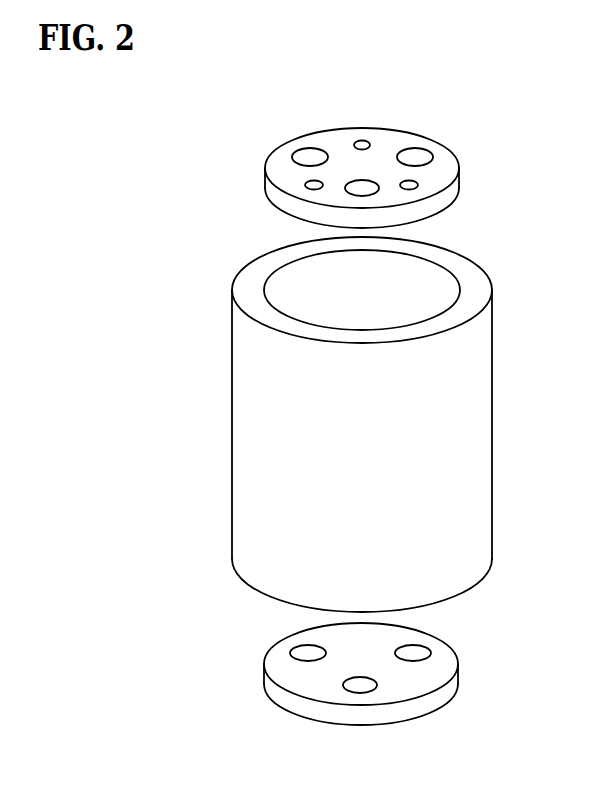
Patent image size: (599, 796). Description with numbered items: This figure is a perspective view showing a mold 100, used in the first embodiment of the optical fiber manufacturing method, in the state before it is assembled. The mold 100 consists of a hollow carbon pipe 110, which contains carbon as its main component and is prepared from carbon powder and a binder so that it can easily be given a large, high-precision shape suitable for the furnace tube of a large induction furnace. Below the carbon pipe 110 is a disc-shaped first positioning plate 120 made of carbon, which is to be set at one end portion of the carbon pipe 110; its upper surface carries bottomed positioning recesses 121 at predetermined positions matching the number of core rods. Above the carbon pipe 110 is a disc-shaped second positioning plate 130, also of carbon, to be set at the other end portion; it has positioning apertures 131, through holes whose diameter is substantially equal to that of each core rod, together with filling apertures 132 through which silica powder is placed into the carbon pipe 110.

The mold 100 is at (190, 257).
The carbon pipe 110 is at (492, 394).
The first positioning plate 120 is at (458, 677).
The positioning recesses 121 is at (415, 652).
The second positioning plate 130 is at (460, 181).
The positioning apertures 131 is at (307, 152).
The filling apertures 132 is at (363, 140).